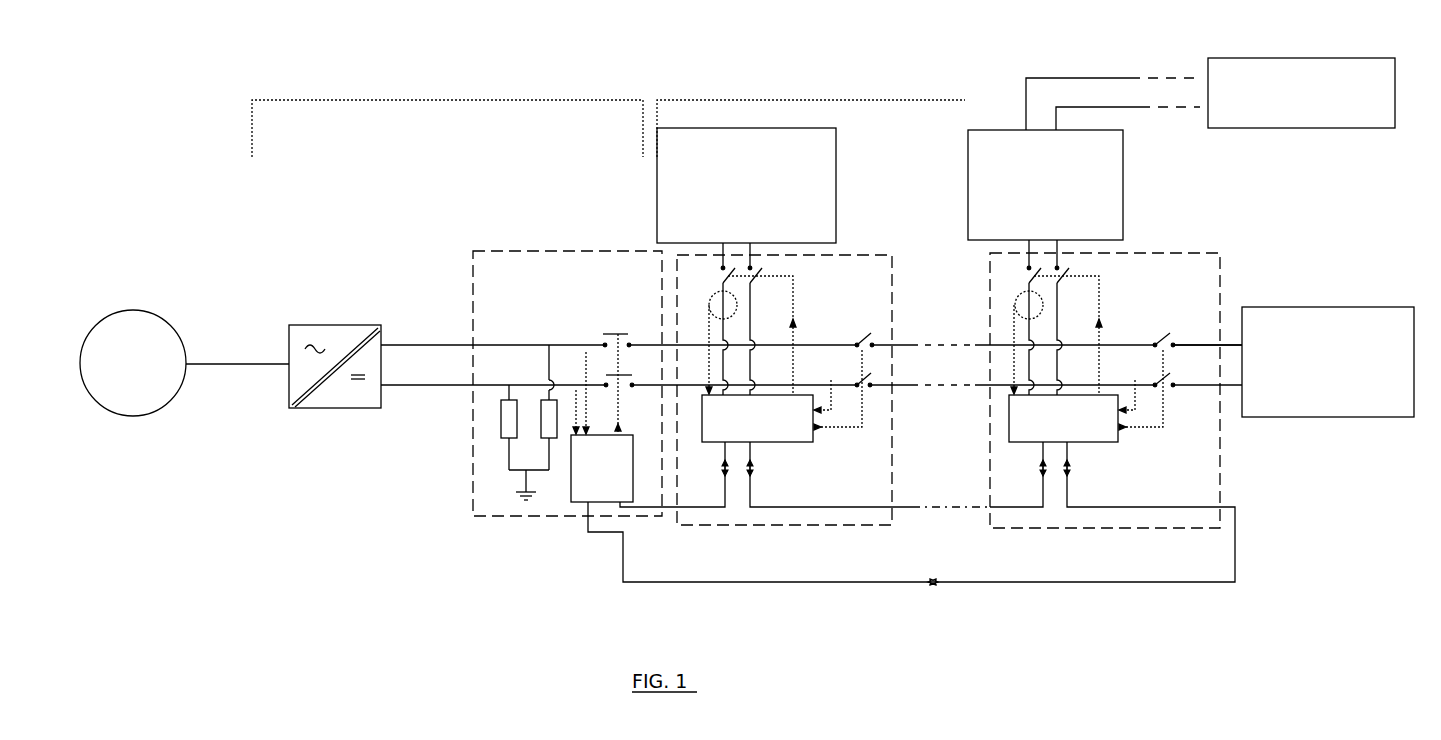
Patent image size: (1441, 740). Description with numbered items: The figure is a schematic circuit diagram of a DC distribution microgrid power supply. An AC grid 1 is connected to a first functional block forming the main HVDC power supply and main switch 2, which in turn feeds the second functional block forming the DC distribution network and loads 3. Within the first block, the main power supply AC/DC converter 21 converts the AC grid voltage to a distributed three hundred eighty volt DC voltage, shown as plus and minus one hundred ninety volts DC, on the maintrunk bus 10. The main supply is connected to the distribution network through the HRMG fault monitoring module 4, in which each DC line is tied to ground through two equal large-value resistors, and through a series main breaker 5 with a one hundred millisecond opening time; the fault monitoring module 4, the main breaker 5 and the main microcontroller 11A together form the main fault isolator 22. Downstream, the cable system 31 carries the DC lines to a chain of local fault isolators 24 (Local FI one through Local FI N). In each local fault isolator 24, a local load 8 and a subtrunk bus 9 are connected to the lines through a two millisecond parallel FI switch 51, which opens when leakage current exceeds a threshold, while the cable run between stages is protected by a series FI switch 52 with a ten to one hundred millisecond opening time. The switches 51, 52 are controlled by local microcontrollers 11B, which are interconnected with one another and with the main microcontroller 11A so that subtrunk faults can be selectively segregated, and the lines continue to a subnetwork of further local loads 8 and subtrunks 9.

The AC grid 1 is at (150, 333).
The main HVDC power supply and main switch 2 is at (265, 97).
The DC distribution network and loads 3 is at (655, 97).
The HRMG fault monitoring module 4 is at (526, 466).
The main breaker 5 is at (608, 333).
The local load 8 is at (1045, 237).
The subtrunk bus 9 is at (838, 182).
The maintrunk bus 10 is at (420, 368).
The main microcontroller 11A is at (577, 490).
The local microcontroller 11B is at (843, 455).
The main power supply AC/DC converter 21 is at (353, 408).
The main fault isolator 22 is at (527, 567).
The local fault isolator 24 is at (755, 567).
The cable system 31 is at (1197, 343).
The local load or subtrunk parallel FI switch 51 is at (773, 270).
The local load or subtrunk series FI switch 52 is at (875, 365).